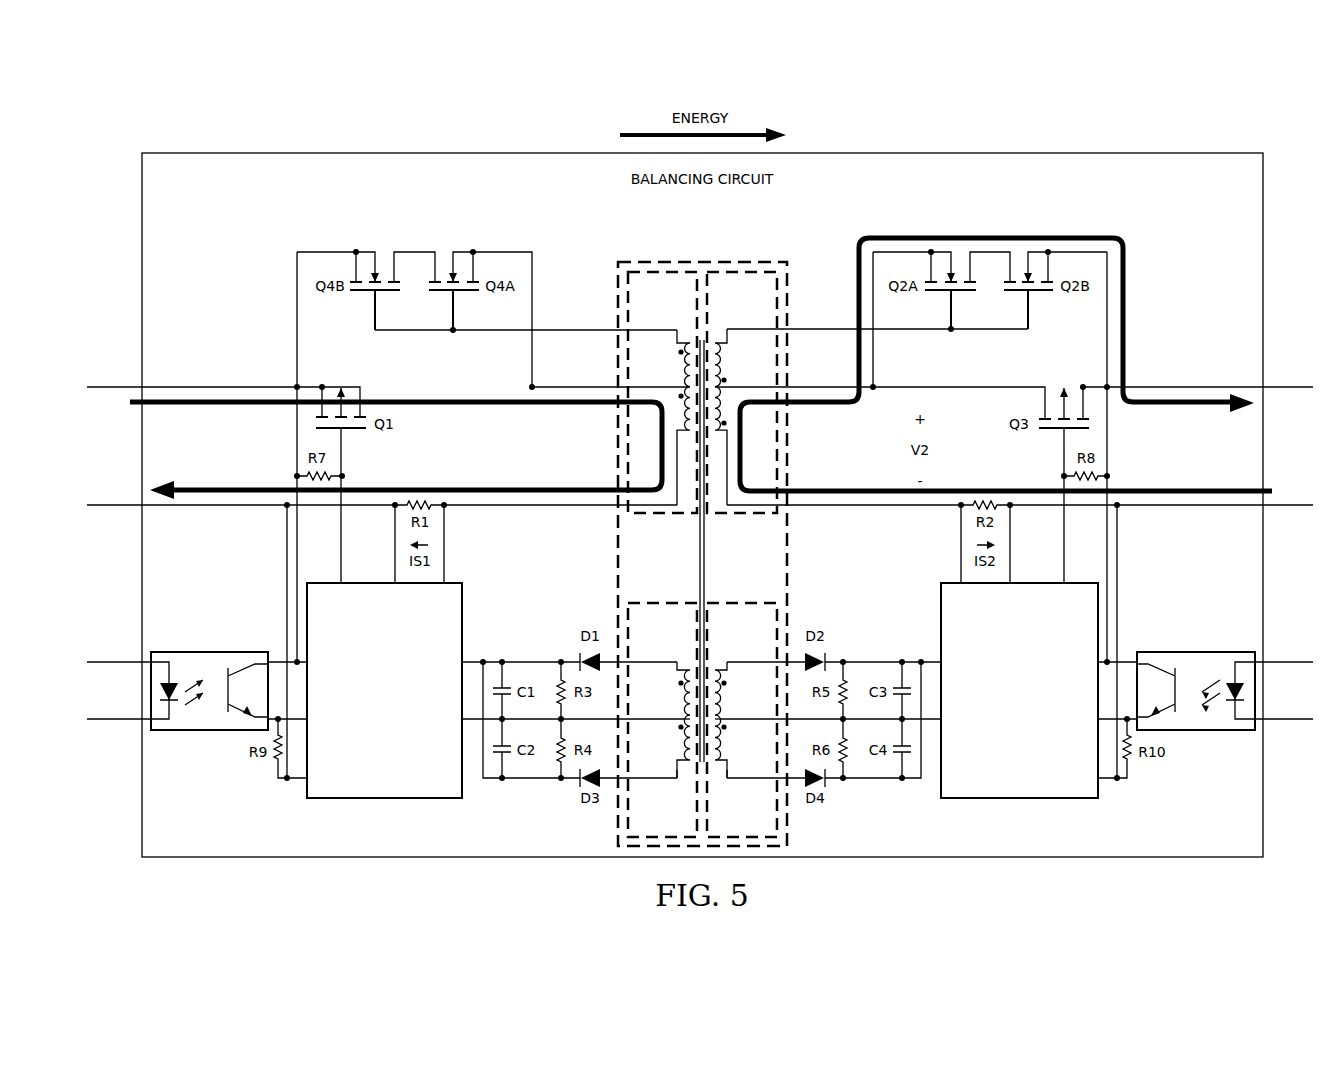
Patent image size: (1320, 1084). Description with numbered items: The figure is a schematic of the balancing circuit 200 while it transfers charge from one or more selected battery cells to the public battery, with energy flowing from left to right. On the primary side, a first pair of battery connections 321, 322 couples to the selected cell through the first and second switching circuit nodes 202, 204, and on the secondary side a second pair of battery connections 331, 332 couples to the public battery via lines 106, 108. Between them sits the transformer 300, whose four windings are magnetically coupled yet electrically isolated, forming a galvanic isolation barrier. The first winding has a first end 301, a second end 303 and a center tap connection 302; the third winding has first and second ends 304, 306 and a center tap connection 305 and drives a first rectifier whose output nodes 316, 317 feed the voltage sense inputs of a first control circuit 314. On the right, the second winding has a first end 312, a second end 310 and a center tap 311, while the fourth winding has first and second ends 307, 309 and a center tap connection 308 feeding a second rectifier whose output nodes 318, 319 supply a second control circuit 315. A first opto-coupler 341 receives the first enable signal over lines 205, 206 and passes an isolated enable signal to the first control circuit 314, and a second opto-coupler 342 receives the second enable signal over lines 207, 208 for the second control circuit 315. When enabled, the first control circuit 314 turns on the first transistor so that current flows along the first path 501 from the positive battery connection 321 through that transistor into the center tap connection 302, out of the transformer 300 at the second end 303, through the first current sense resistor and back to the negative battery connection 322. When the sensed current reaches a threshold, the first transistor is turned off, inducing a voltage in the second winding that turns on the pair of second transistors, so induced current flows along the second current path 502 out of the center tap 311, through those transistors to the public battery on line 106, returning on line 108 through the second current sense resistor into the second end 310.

The balancing circuit 200 is at (702, 479).
The transformer 300 is at (702, 524).
The first end of first winding W1 301 is at (526, 307).
The center tap connection of first winding W1 302 is at (609, 365).
The second end of first winding W1 303 is at (560, 532).
The first end of third winding W3 304 is at (662, 554).
The center tap connection of third winding W3 305 is at (662, 748).
The second end of third winding W3 306 is at (655, 802).
The first end of fourth winding W4 307 is at (749, 802).
The center tap connection of fourth winding W4 308 is at (743, 748).
The second end of fourth winding W4 309 is at (743, 553).
The second end of second winding W2 310 is at (844, 532).
The center tap of second winding W2 311 is at (880, 379).
The first end of second winding W2 312 is at (877, 307).
The first control circuit 314 is at (384, 716).
The second control circuit 315 is at (1019, 716).
The first rectifier output node 316 is at (521, 638).
The first rectifier output node 317 is at (566, 773).
The second rectifier output node 318 is at (883, 638).
The second rectifier output node 319 is at (838, 773).
The first battery connection 321 is at (251, 378).
The first battery connection 322 is at (268, 530).
The second battery connection 331 is at (1173, 363).
The second battery connection 332 is at (1136, 532).
The first opto-coupler 341 is at (229, 723).
The second opto-coupler 342 is at (1176, 723).
The first path 501 is at (396, 450).
The second current path 502 is at (1006, 339).
The first switching circuit node 202 is at (114, 353).
The second switching circuit node 204 is at (114, 471).
The line 205 is at (119, 628).
The line 206 is at (119, 757).
The line 106 is at (1289, 353).
The line 108 is at (1289, 471).
The line 207 is at (1285, 628).
The line 208 is at (1285, 757).